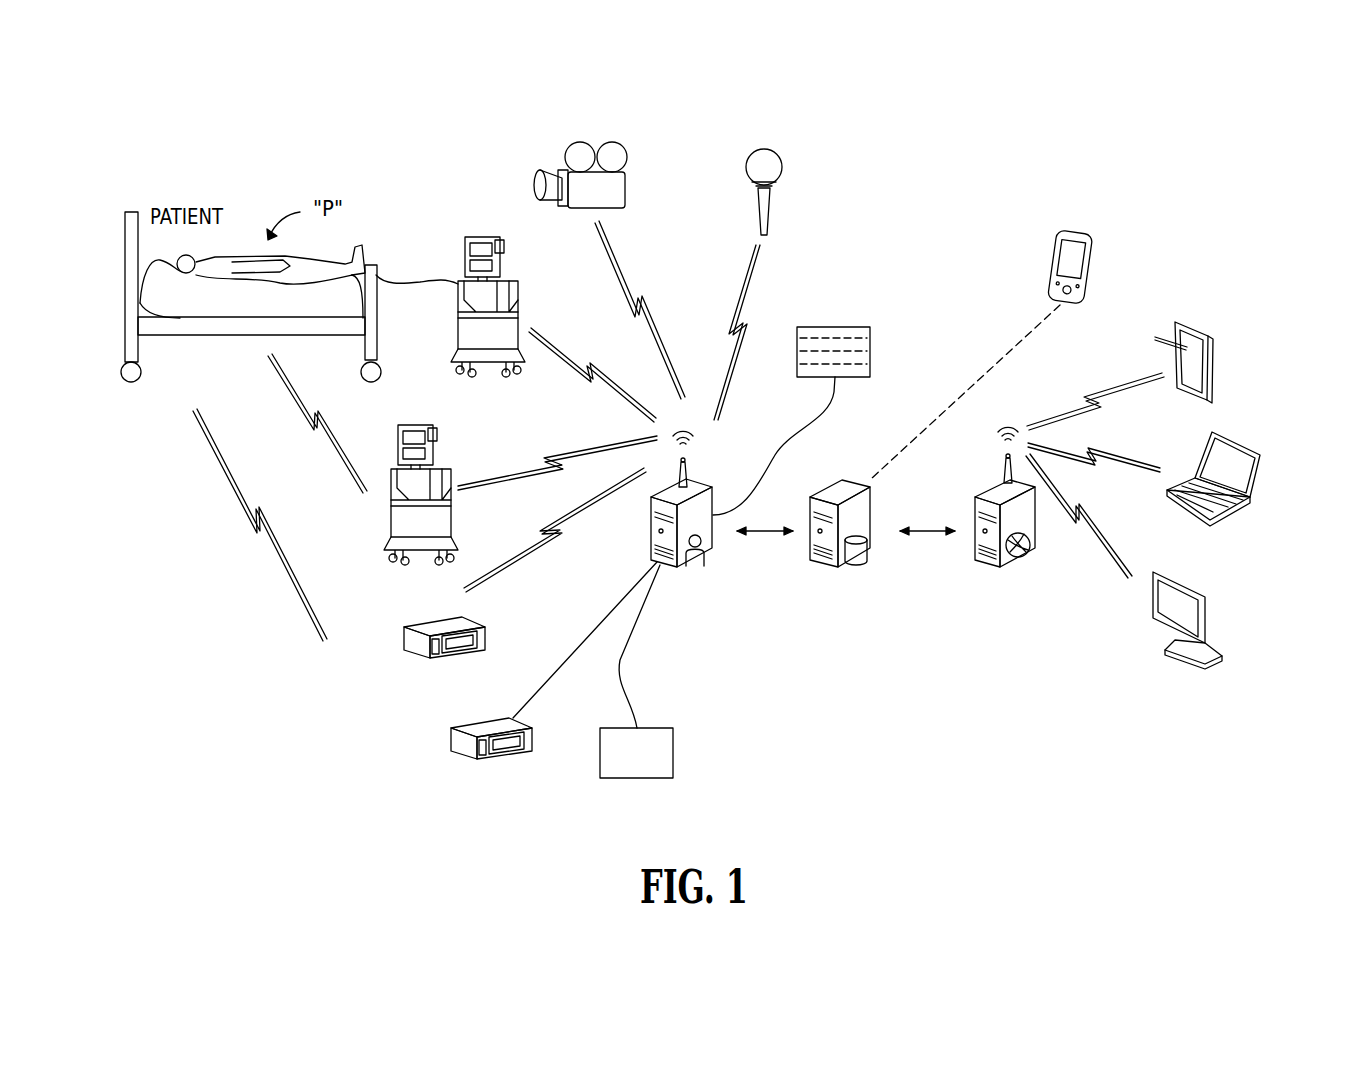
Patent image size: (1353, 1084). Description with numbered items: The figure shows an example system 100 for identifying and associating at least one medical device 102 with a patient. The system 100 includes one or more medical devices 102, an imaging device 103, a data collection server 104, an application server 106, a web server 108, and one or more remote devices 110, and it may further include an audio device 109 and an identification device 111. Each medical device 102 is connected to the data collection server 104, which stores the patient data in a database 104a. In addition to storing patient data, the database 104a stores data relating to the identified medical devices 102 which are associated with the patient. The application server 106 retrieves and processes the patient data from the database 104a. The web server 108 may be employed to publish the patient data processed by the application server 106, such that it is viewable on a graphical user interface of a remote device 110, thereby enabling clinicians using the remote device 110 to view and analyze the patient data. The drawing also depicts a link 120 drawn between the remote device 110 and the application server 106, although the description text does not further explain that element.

The system 100 is at (1173, 281).
The medical device 102 is at (458, 338).
The imaging device 103 is at (540, 190).
The data collection server 104 is at (710, 484).
The database 104a is at (857, 327).
The application server 106 is at (847, 478).
The web server 108 is at (977, 486).
The audio device 109 is at (771, 150).
The remote device 110 is at (1090, 268).
The identification device 111 is at (655, 778).
The communication link 120 is at (1005, 354).